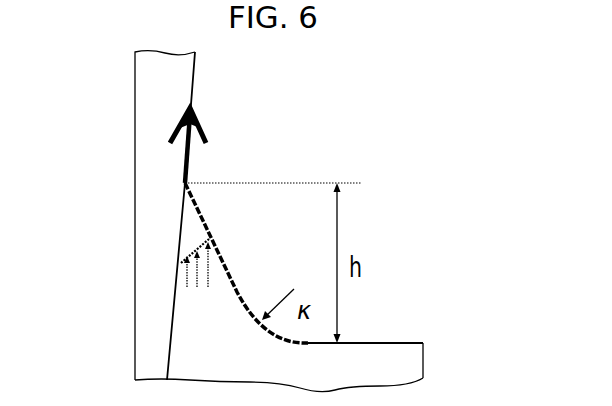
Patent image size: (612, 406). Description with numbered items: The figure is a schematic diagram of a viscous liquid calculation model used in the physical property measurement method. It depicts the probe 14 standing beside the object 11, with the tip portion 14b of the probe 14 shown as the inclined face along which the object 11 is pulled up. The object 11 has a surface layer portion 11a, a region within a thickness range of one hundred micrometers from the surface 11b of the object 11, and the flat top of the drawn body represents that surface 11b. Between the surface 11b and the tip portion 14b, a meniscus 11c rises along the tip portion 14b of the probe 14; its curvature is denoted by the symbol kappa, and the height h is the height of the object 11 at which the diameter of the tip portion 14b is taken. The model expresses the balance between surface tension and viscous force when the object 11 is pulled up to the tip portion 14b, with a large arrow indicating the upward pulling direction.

The probe 14 is at (106, 90).
The tip portion of the probe 14b is at (153, 170).
The object 11 is at (469, 310).
The surface layer portion 11a is at (403, 363).
The surface of the object 11b is at (402, 343).
The meniscus 11c is at (249, 255).